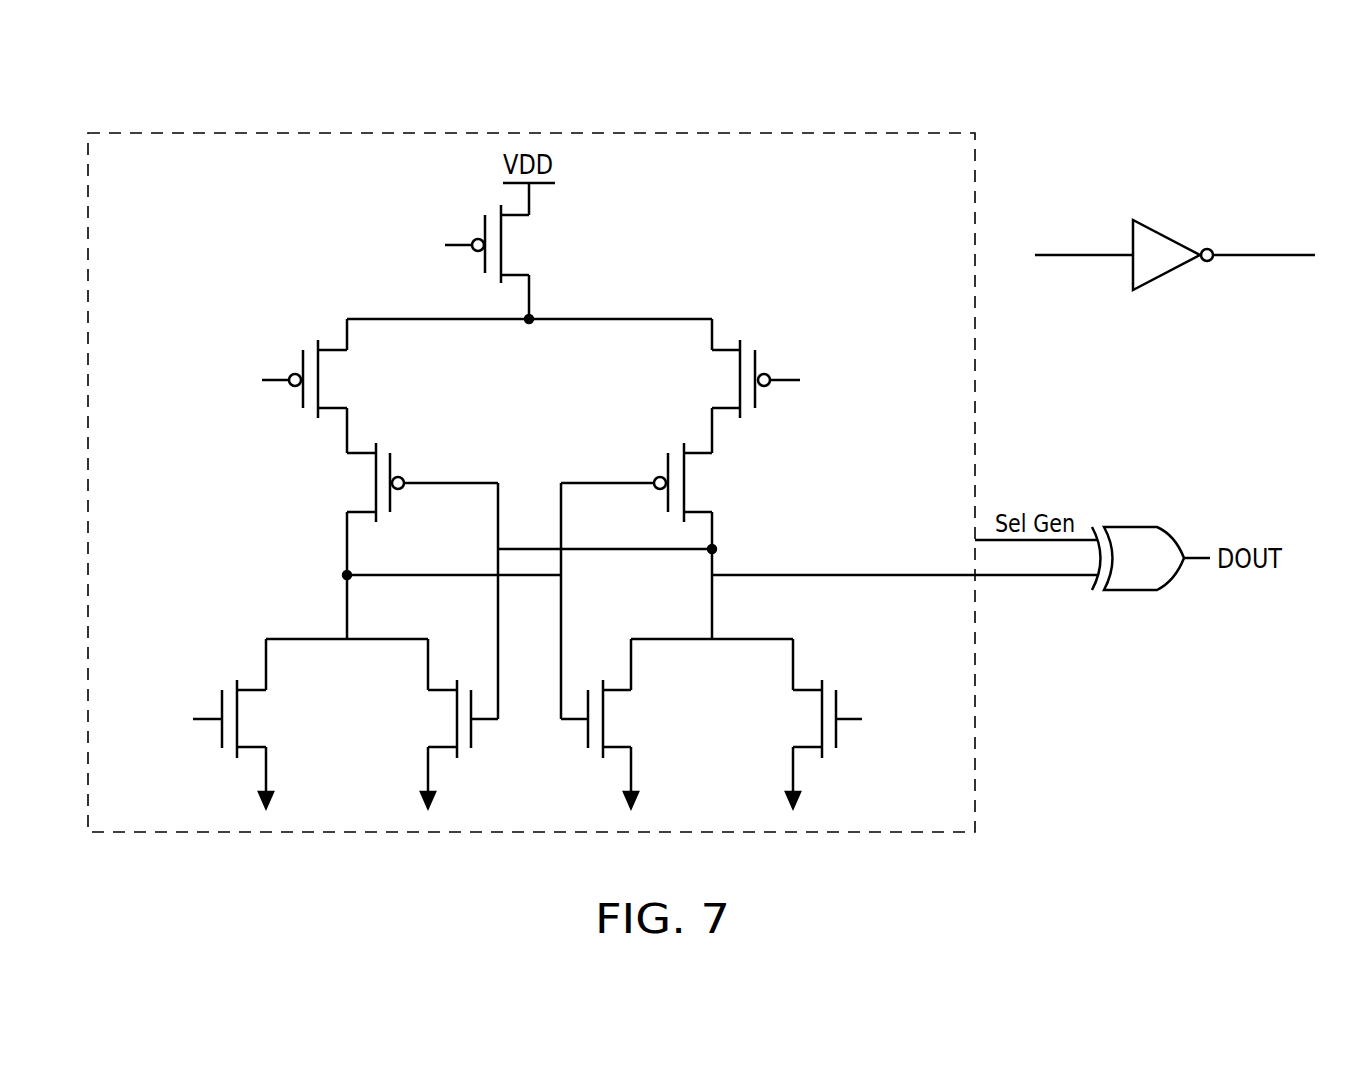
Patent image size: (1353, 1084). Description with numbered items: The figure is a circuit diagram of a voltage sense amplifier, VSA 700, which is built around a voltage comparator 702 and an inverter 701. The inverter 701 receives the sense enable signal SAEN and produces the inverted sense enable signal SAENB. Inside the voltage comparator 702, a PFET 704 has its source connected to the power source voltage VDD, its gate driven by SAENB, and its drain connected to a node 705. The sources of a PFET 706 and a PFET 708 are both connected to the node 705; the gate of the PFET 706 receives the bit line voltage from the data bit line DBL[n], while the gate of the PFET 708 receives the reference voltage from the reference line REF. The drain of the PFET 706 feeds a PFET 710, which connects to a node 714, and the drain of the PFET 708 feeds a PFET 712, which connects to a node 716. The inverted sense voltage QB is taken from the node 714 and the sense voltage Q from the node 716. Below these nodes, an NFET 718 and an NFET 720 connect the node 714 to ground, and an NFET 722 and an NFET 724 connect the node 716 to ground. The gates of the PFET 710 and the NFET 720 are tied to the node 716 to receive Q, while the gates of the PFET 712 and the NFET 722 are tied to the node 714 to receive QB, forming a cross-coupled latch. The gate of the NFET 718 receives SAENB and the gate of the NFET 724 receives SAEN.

The VSA 700 is at (1148, 118).
The inverter 701 is at (1170, 232).
The voltage comparator 702 is at (890, 131).
The PFET 704 is at (518, 245).
The node 705 is at (532, 317).
The PFET 706 is at (337, 380).
The PFET 708 is at (719, 380).
The PFET 710 is at (354, 483).
The PFET 712 is at (700, 483).
The node 714 is at (345, 574).
The node 716 is at (716, 548).
The NFET 718 is at (255, 719).
The NFET 720 is at (434, 719).
The NFET 722 is at (625, 719).
The NFET 724 is at (799, 719).